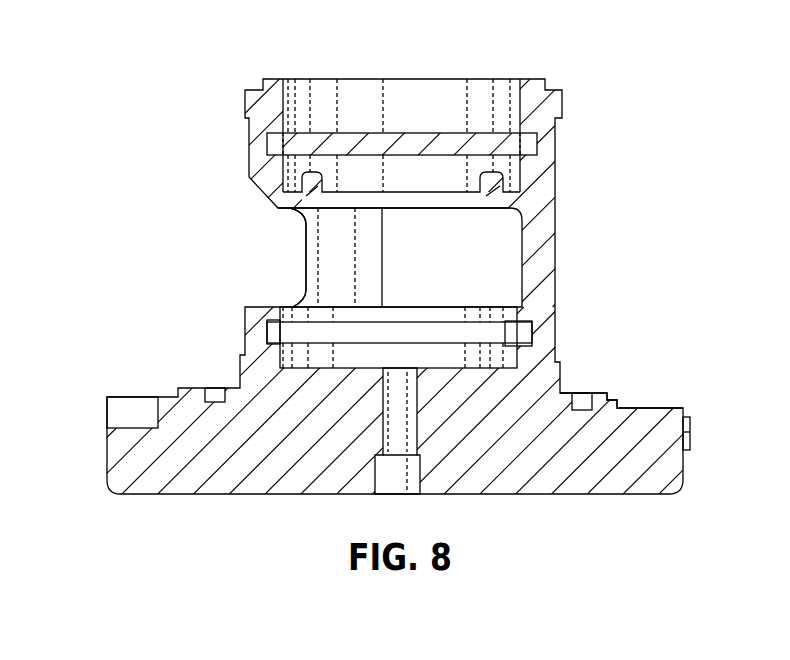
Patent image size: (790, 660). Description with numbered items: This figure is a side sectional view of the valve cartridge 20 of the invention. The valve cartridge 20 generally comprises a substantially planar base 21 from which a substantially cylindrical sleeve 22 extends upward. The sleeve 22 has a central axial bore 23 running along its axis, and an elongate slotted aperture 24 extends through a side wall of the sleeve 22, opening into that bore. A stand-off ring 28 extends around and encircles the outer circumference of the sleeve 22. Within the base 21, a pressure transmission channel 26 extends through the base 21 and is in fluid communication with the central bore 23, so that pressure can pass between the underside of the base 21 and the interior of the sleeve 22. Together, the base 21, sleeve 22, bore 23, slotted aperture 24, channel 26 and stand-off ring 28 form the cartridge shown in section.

The valve cartridge 20 is at (563, 260).
The base 21 is at (116, 447).
The sleeve 22 is at (535, 183).
The central axial bore 23 is at (384, 168).
The elongate slotted aperture 24 is at (432, 265).
The pressure transmission channel 26 is at (405, 432).
The stand-off ring 28 is at (605, 402).